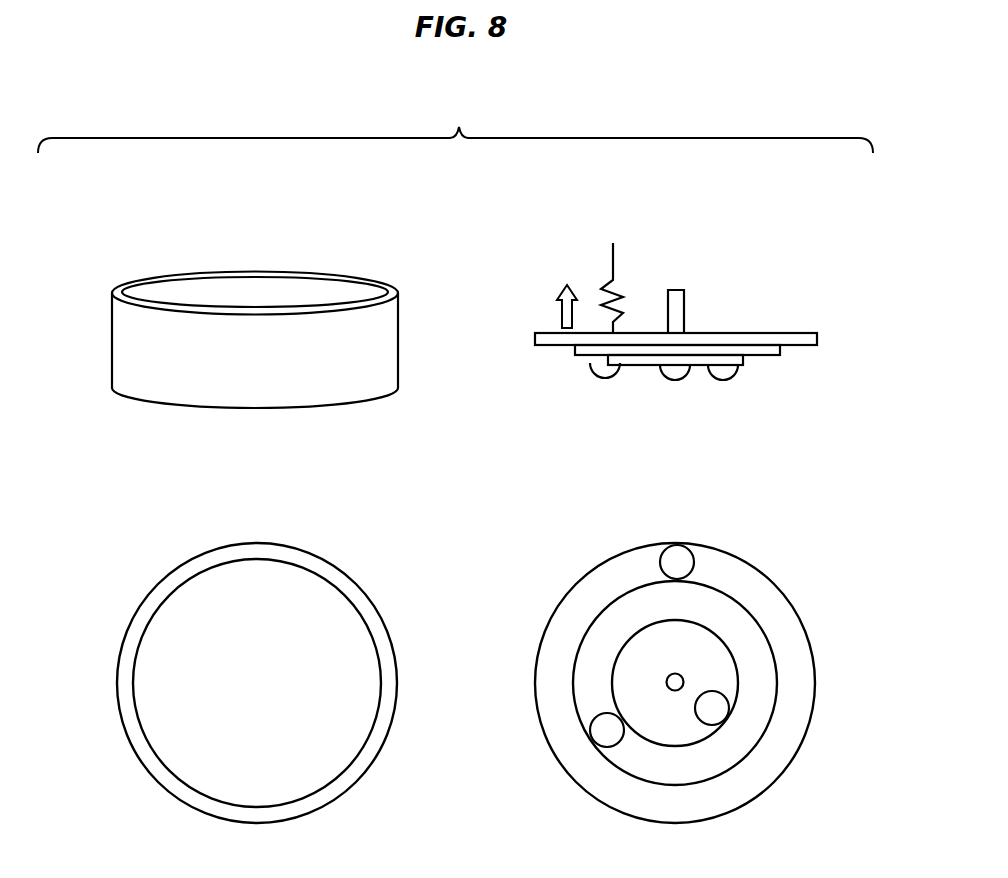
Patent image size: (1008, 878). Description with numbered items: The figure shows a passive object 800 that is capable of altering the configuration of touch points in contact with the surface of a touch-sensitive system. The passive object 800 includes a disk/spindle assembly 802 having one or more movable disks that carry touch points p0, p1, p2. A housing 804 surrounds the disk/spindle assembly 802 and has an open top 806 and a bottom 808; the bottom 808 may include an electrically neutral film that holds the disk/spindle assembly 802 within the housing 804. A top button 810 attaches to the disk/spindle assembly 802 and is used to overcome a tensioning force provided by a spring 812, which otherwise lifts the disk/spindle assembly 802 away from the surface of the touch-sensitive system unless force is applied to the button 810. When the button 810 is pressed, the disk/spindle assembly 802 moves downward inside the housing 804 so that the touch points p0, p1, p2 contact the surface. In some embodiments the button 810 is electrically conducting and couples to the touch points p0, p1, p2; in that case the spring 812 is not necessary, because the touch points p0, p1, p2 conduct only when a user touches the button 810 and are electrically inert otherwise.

The passive object 800 is at (455, 126).
The disk/spindle assembly 802 is at (724, 330).
The housing 804 is at (220, 335).
The open top 806 is at (208, 258).
The bottom 808 is at (212, 414).
The top button 810 is at (172, 623).
The spring 812 is at (613, 262).
The touch point p0 is at (672, 381).
The touch point p1 is at (592, 370).
The touch point p2 is at (728, 372).